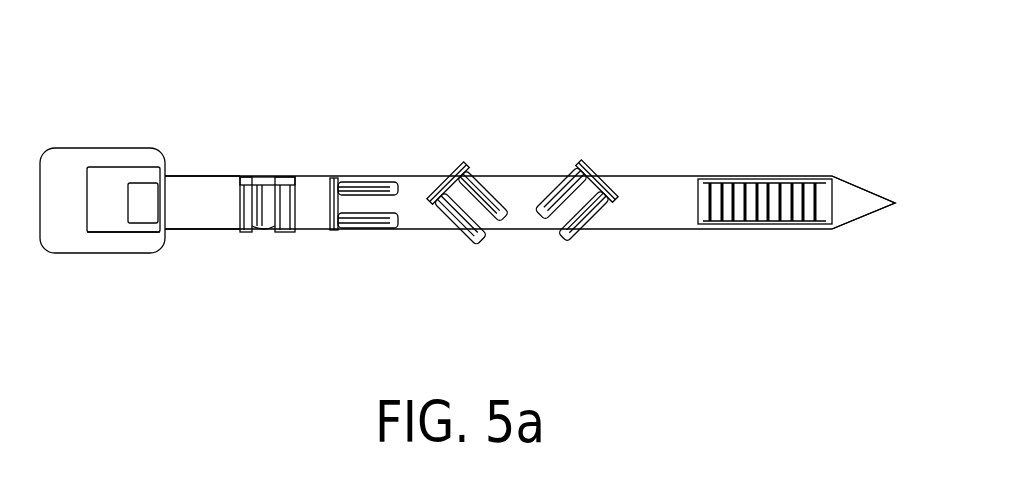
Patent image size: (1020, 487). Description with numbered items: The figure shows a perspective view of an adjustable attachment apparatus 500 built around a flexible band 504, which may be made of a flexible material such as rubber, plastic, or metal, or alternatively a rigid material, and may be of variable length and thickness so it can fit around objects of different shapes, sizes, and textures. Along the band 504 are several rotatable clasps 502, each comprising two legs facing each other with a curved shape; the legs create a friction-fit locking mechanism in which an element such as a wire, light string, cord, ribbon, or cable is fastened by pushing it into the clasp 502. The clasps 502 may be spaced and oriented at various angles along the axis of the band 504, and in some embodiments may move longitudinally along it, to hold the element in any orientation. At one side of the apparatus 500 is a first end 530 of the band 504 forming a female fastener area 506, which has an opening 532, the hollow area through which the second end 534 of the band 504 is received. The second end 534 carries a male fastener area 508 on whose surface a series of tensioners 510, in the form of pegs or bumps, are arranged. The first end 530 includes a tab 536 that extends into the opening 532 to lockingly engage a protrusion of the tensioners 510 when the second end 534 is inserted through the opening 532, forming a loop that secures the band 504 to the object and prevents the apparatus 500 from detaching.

The adjustable attachment apparatus 500 is at (186, 58).
The rotatable clasp 502 is at (373, 210).
The flexible band 504 is at (205, 213).
The female fastener area 506 is at (112, 215).
The male fastener area 508 is at (908, 170).
The tensioners 510 is at (762, 223).
The first end 530 is at (73, 160).
The opening 532 is at (127, 177).
The second end 534 is at (858, 212).
The tab 536 is at (145, 212).